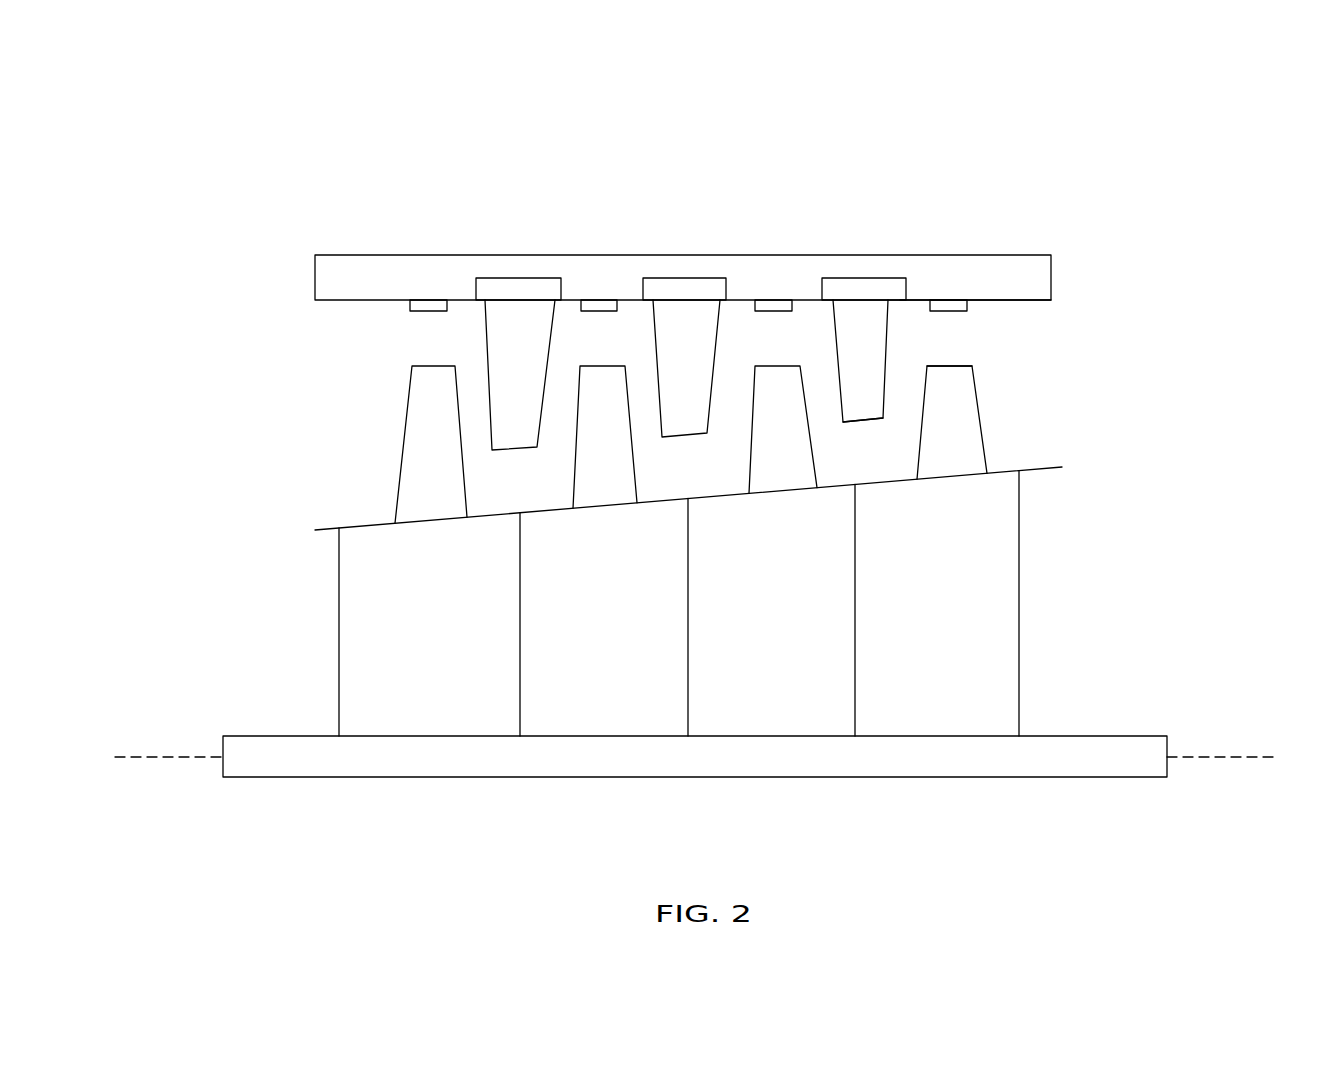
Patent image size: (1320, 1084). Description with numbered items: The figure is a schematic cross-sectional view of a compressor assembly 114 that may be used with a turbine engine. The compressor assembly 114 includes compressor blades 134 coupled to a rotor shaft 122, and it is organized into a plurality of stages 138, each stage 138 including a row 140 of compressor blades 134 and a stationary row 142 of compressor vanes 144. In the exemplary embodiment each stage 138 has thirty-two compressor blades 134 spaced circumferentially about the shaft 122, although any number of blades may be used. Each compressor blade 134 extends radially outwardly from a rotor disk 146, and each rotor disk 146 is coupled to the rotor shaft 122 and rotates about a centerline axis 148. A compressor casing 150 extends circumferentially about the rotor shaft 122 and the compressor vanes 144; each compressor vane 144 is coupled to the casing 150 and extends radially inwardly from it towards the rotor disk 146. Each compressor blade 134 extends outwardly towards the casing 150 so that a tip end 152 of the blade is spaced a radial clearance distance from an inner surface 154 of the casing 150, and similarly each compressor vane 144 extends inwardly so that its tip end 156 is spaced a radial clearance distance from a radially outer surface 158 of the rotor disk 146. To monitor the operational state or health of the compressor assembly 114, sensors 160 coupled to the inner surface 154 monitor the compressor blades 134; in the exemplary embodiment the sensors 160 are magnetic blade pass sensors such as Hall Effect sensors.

The compressor assembly 114 is at (889, 146).
The rotor shaft 122 is at (1093, 735).
The compressor blade 134 is at (417, 480).
The stage 138 is at (503, 232).
The row of compressor blades 140 is at (413, 354).
The stationary row of compressor vanes 142 is at (525, 456).
The compressor vane 144 is at (525, 357).
The rotor disk 146 is at (352, 660).
The centerline axis 148 is at (1220, 755).
The compressor casing 150 is at (790, 268).
The tip end 152 is at (965, 359).
The inner surface 154 is at (1025, 300).
The tip end 156 is at (853, 422).
The radially outer surface 158 is at (892, 480).
The sensor 160 is at (418, 311).